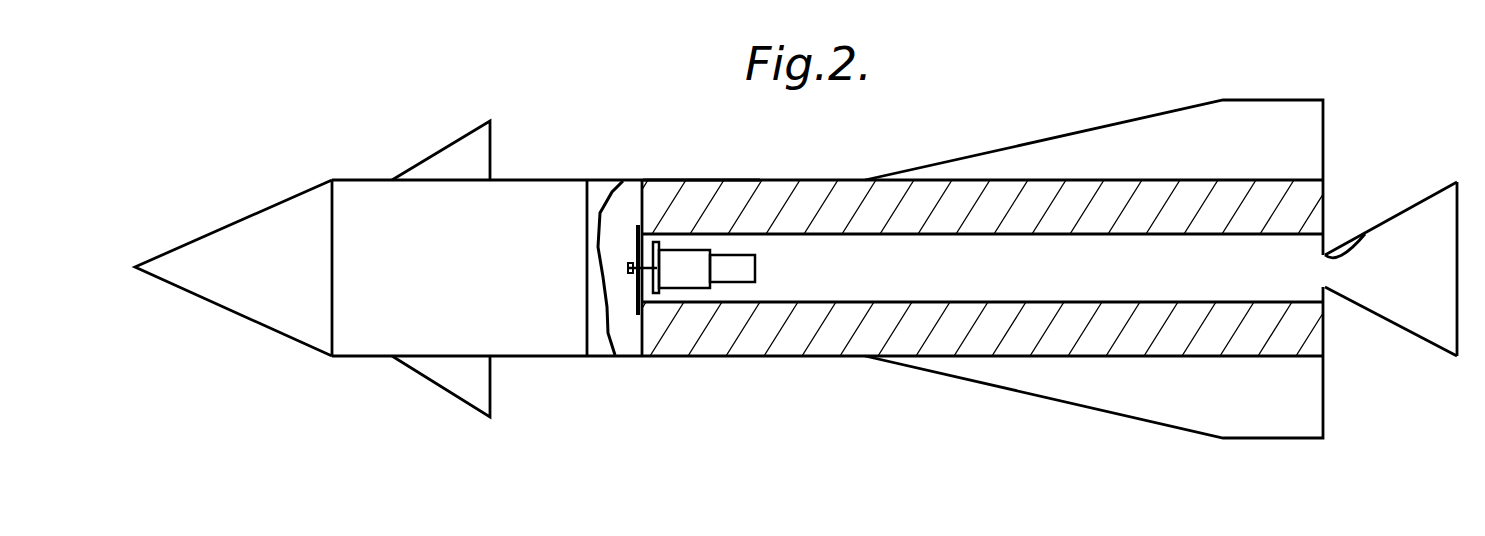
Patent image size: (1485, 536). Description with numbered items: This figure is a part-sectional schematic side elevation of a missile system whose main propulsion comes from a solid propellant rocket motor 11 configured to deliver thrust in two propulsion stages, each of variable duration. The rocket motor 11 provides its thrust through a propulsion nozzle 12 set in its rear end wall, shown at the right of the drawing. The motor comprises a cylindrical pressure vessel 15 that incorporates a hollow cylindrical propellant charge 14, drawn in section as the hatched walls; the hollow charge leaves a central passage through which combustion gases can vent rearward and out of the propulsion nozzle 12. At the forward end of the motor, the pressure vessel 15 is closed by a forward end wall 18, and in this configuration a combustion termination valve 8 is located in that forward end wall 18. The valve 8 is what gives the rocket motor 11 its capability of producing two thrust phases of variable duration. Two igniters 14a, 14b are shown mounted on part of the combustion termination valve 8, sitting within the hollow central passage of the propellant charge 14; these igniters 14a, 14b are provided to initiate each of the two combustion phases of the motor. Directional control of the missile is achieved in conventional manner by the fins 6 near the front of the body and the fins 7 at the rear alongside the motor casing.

The fins 6 is at (477, 155).
The fins 7 is at (1165, 120).
The combustion termination valve 8 is at (628, 288).
The main propulsion solid propellant rocket motor 11 is at (733, 358).
The propulsion nozzle 12 is at (1362, 237).
The hollow cylindrical propellant charge 14 is at (838, 196).
The igniter 14a is at (690, 258).
The igniter 14b is at (735, 262).
The cylindrical pressure vessel 15 is at (703, 182).
The forward end wall 18 is at (637, 222).